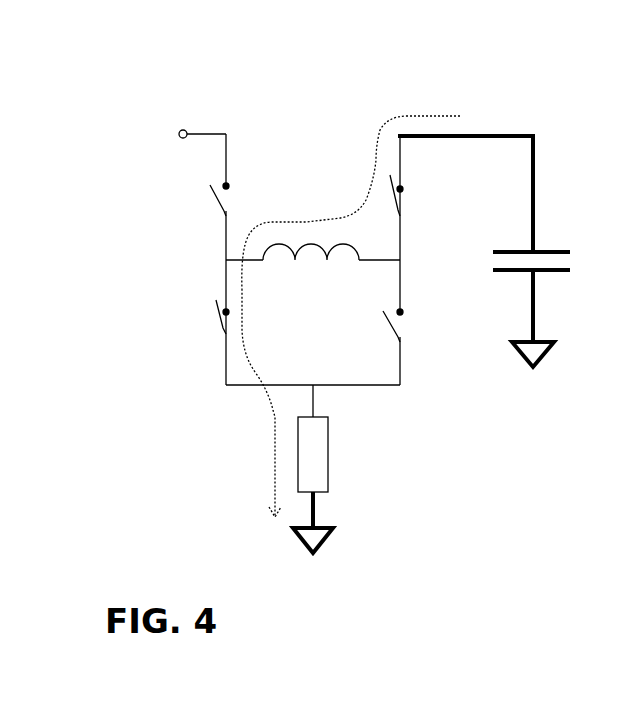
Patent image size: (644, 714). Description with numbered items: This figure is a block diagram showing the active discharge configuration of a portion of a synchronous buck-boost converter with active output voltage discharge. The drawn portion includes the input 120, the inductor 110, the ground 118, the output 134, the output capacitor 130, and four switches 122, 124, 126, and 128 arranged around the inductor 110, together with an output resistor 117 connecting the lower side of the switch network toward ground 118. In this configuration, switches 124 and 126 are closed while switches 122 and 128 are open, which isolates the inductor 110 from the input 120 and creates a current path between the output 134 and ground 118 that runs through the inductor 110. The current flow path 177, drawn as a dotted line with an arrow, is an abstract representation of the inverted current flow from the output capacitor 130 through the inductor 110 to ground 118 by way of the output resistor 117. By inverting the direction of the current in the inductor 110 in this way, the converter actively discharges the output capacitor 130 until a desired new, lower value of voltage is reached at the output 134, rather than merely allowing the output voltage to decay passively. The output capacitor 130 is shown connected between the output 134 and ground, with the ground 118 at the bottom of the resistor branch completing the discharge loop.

The inductor 110 is at (311, 200).
The output resistor 117 is at (367, 454).
The ground 118 is at (359, 522).
The input 120 is at (228, 115).
The switch 122 is at (173, 198).
The switch 124 is at (177, 317).
The switch 126 is at (444, 195).
The switch 128 is at (441, 325).
The output capacitor 130 is at (547, 270).
The output 134 is at (491, 148).
The current flow path 177 is at (351, 281).